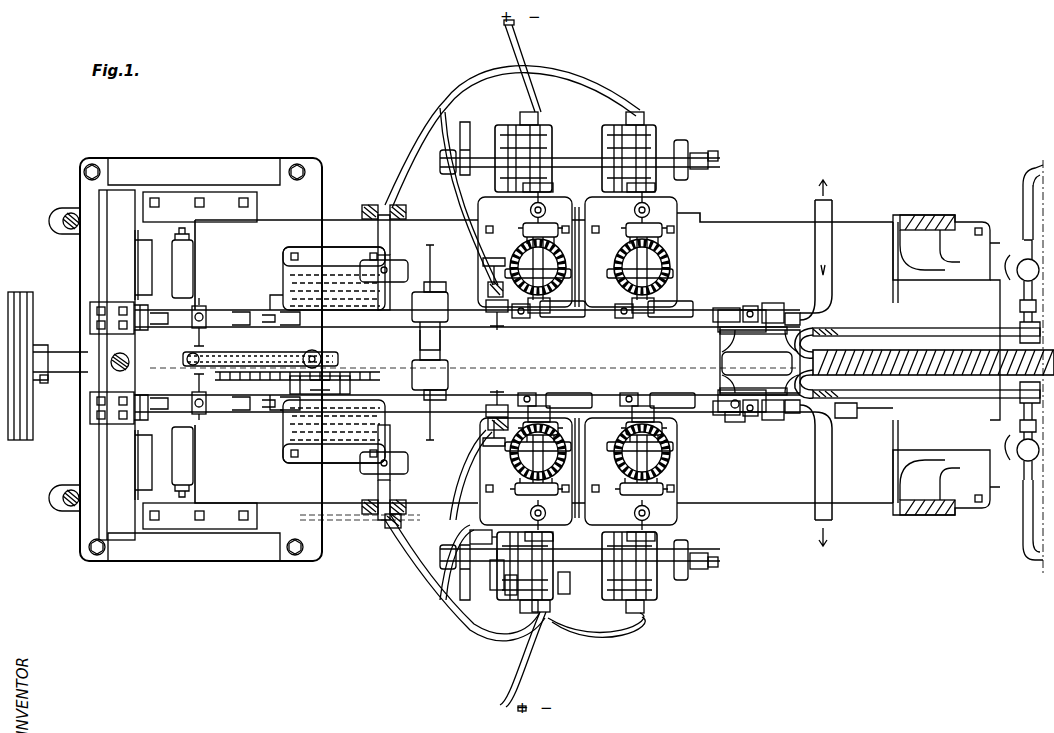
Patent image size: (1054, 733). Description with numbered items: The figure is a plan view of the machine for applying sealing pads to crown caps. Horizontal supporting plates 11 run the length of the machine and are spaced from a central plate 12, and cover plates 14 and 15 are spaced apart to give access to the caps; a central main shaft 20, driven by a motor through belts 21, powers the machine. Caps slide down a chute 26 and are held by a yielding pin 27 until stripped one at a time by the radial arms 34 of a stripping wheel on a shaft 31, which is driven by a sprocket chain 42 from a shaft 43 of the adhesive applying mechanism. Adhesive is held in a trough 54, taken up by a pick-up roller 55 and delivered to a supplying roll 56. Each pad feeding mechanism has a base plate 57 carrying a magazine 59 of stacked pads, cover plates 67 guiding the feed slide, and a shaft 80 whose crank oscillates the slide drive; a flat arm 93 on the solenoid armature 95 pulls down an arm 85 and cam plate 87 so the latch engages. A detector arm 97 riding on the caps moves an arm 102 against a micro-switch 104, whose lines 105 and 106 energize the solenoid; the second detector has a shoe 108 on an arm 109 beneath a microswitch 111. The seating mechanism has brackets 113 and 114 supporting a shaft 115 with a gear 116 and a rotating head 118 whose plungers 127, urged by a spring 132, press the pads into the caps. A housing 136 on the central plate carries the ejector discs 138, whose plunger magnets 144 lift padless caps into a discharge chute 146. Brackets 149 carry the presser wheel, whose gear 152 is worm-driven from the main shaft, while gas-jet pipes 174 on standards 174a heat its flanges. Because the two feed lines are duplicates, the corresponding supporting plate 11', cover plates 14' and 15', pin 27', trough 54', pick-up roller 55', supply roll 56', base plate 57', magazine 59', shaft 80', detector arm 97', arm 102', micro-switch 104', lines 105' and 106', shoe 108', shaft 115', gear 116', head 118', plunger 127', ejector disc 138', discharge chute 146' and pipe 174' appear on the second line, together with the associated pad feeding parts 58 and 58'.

The horizontal supporting plates 11 is at (471, 359).
The upper bed frame 11' is at (544, 254).
The central plate 12 is at (652, 365).
The cover plate 14 is at (467, 420).
The upper shaft 14' is at (467, 302).
The cover plate 15 is at (502, 393).
The shaft bearing 15' is at (717, 325).
The main shaft 20 is at (58, 352).
The driving belts 21 is at (33, 392).
The chute 26 is at (142, 312).
The pin 27 is at (176, 460).
The bracket 27' is at (199, 263).
The shaft 31 is at (242, 380).
The radially projecting arms 34 is at (221, 310).
The sprocket chain 42 is at (236, 358).
The shaft 43 is at (303, 356).
The trough 54 is at (334, 437).
The tank 54' is at (334, 278).
The pick-up roller 55 is at (265, 429).
The tank support 55' is at (267, 285).
The adhesive supplying roll 56 is at (335, 426).
The liquid 56' is at (335, 291).
The base plate 57 is at (578, 471).
The gear housing 57' is at (577, 252).
The gear 58 is at (590, 452).
The gear 58' is at (601, 267).
The magazine 59 is at (571, 515).
The hand wheel 59' is at (564, 202).
The cover plates 67 is at (520, 598).
The shaft 80 is at (580, 571).
The motor 80' is at (580, 152).
The arm 85 is at (512, 556).
The cam plate 87 is at (500, 580).
The flat arm 93 is at (550, 605).
The armature 95 is at (548, 624).
The arm 97 is at (430, 388).
The pump 97' is at (436, 297).
The arm 102 is at (392, 472).
The valve 102' is at (394, 262).
The micro-switch 104 is at (394, 499).
The terminal block 104' is at (384, 199).
The line 105 is at (511, 577).
The wire 105' is at (509, 114).
The line 106 is at (413, 562).
The wire 106' is at (430, 202).
The detector shoe 108 is at (484, 408).
The clamp 108' is at (485, 305).
The arm 109 is at (488, 424).
The microswitch 111 is at (480, 437).
The bracket 113 is at (571, 450).
The bracket 114 is at (516, 487).
The shaft 115 is at (604, 491).
The bearing bar 115' is at (589, 263).
The gear 116 is at (613, 411).
The bearing 116' is at (592, 268).
The rotating head 118 is at (620, 386).
The collar 118' is at (616, 322).
The cylindrical plunger 127 is at (573, 388).
The clamp 127' is at (568, 334).
The spring 132 is at (384, 523).
The housing 136 is at (731, 371).
The disc 138 is at (755, 412).
The clamp 138' is at (761, 305).
The magnet 144 is at (742, 412).
The discharge chute 146 is at (830, 473).
The pipe 146' is at (831, 252).
The brackets 149 is at (940, 250).
The gear 152 is at (940, 350).
The pipe 174 is at (926, 404).
The pipe 174' is at (926, 327).
The standard 174a is at (797, 345).